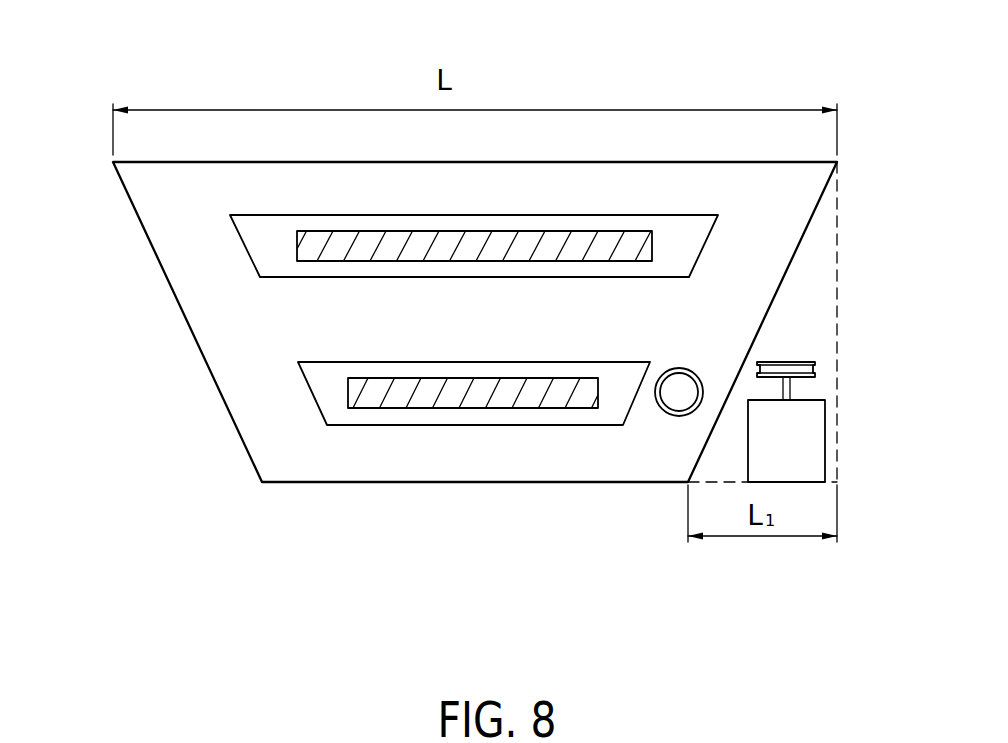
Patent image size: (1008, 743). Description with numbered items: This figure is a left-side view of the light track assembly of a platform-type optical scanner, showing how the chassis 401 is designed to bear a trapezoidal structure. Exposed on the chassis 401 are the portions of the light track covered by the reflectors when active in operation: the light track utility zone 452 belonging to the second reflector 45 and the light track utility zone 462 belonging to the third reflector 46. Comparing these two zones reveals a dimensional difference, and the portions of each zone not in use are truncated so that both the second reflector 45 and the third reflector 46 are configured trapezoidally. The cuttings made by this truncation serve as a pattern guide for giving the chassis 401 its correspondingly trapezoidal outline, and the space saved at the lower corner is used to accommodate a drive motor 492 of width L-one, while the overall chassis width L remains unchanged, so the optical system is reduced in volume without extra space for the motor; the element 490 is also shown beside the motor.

The chassis 401 is at (800, 208).
The second reflector 45 is at (260, 256).
The light track utility zone 452 is at (297, 245).
The third reflector 46 is at (335, 416).
The light track utility zone 462 is at (353, 385).
The circular pivot 490 is at (678, 388).
The drive motor 492 is at (811, 443).